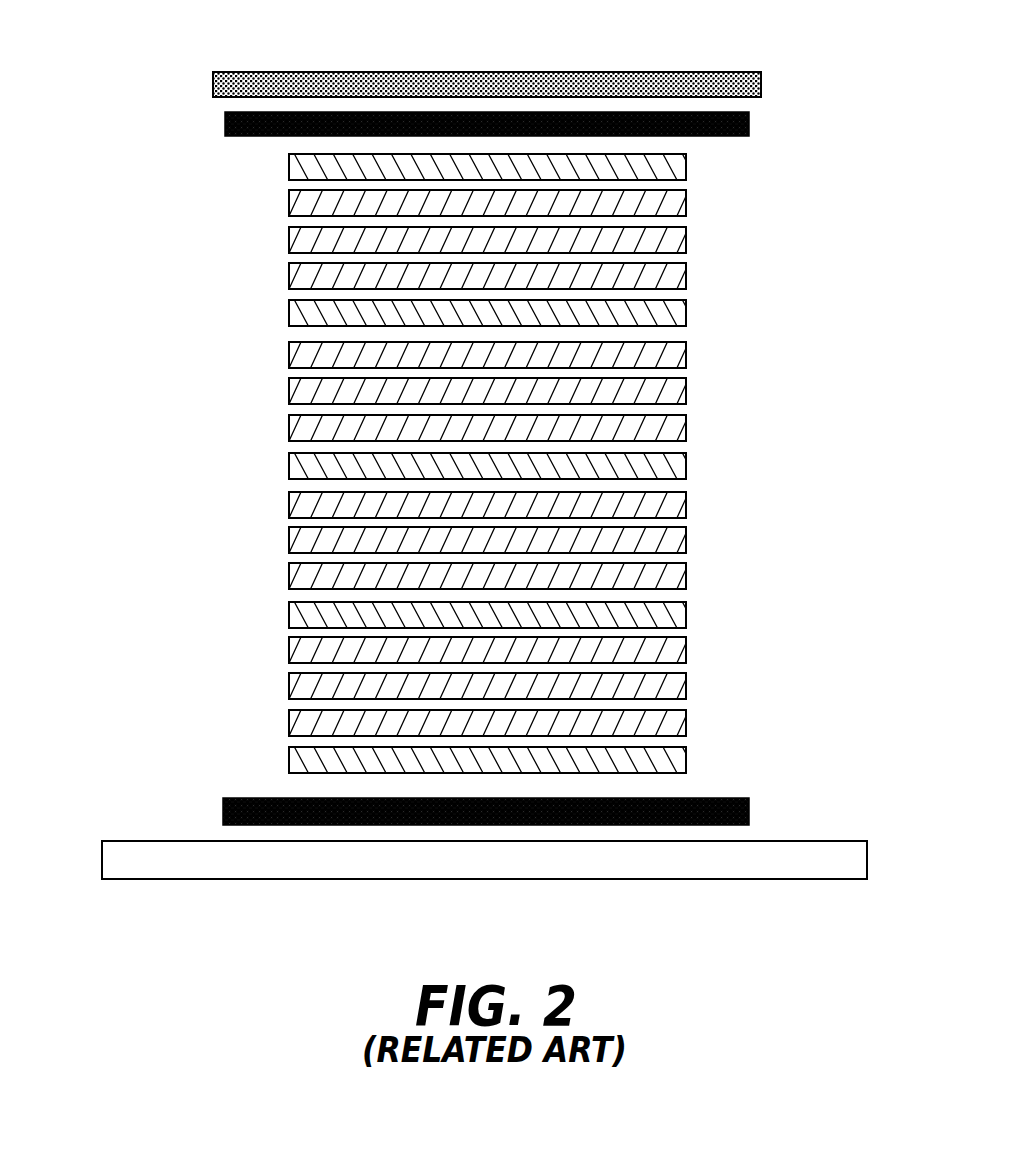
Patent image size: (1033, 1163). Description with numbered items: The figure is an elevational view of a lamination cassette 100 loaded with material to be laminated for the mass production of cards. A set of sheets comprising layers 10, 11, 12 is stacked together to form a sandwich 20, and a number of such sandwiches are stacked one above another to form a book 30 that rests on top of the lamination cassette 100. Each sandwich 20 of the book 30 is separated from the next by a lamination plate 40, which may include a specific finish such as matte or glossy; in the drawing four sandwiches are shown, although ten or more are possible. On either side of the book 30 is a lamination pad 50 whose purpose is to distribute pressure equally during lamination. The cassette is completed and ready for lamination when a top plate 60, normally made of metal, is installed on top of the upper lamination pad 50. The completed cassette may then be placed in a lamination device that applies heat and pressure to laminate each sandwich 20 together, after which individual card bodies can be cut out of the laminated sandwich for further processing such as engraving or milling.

The layer 10 is at (288, 201).
The layer 11 is at (288, 238).
The layer 12 is at (462, 501).
The sandwich 20 is at (418, 464).
The book 30 is at (146, 475).
The lamination plate 40 is at (686, 165).
The lamination pad 50 is at (749, 123).
The top plate 60 is at (714, 72).
The lamination cassette 100 is at (756, 880).